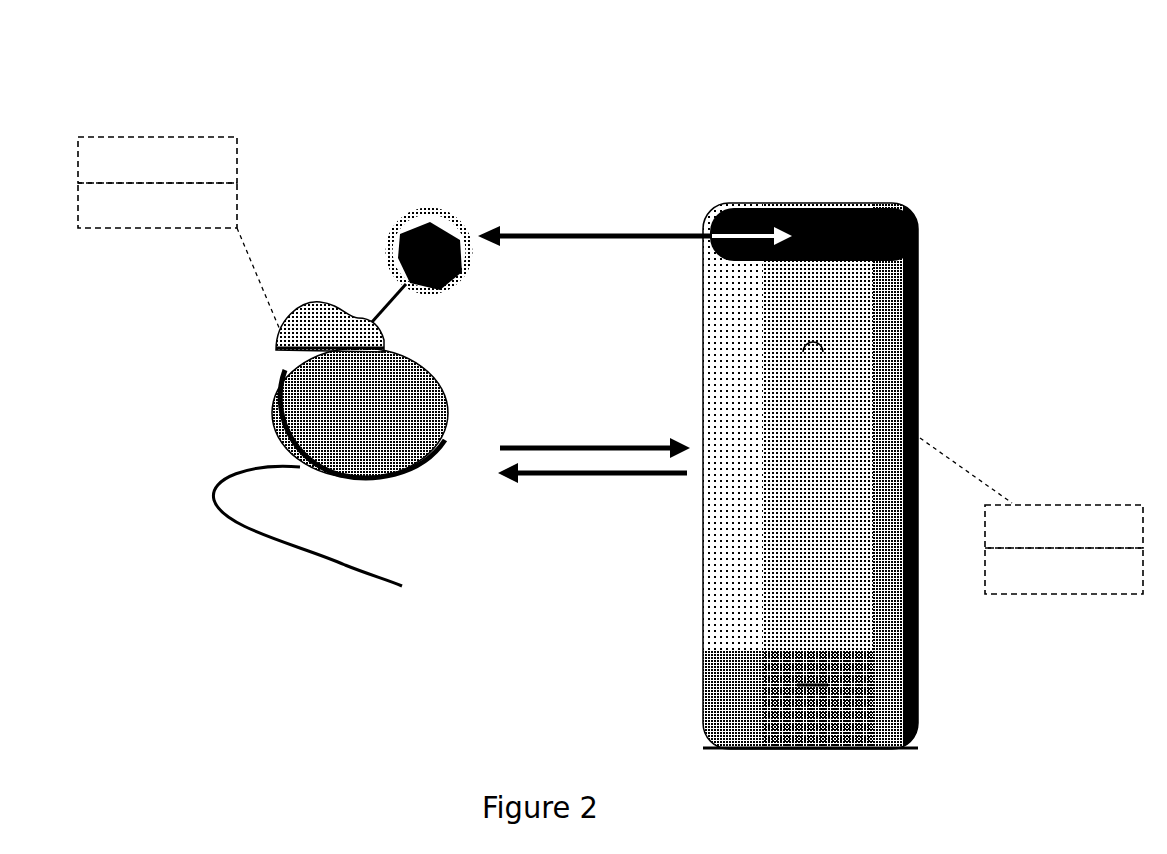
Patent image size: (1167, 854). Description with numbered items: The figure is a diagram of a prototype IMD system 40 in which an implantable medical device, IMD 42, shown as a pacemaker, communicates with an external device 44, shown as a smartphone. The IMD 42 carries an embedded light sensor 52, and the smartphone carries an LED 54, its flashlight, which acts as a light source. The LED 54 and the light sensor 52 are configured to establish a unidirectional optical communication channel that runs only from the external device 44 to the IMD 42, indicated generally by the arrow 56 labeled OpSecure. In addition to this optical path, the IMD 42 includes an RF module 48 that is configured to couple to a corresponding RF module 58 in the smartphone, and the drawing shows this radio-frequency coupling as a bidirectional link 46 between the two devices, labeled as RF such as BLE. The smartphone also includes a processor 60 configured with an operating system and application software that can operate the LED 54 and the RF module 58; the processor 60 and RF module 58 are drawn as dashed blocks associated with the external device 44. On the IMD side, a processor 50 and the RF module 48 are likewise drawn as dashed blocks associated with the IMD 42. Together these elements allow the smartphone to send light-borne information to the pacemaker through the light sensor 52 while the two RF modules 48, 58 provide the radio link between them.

The system 40 is at (384, 80).
The IMD 42 is at (272, 415).
The external device 44 is at (917, 347).
The RF communication link (e.g., BLE) 46 is at (575, 410).
The RF module 48 is at (237, 203).
The IMD processor 50 is at (237, 158).
The light sensor 52 is at (463, 282).
The LED 54 is at (860, 213).
The arrow 56 is at (560, 238).
The RF module 58 is at (1028, 596).
The processor 60 is at (1050, 503).